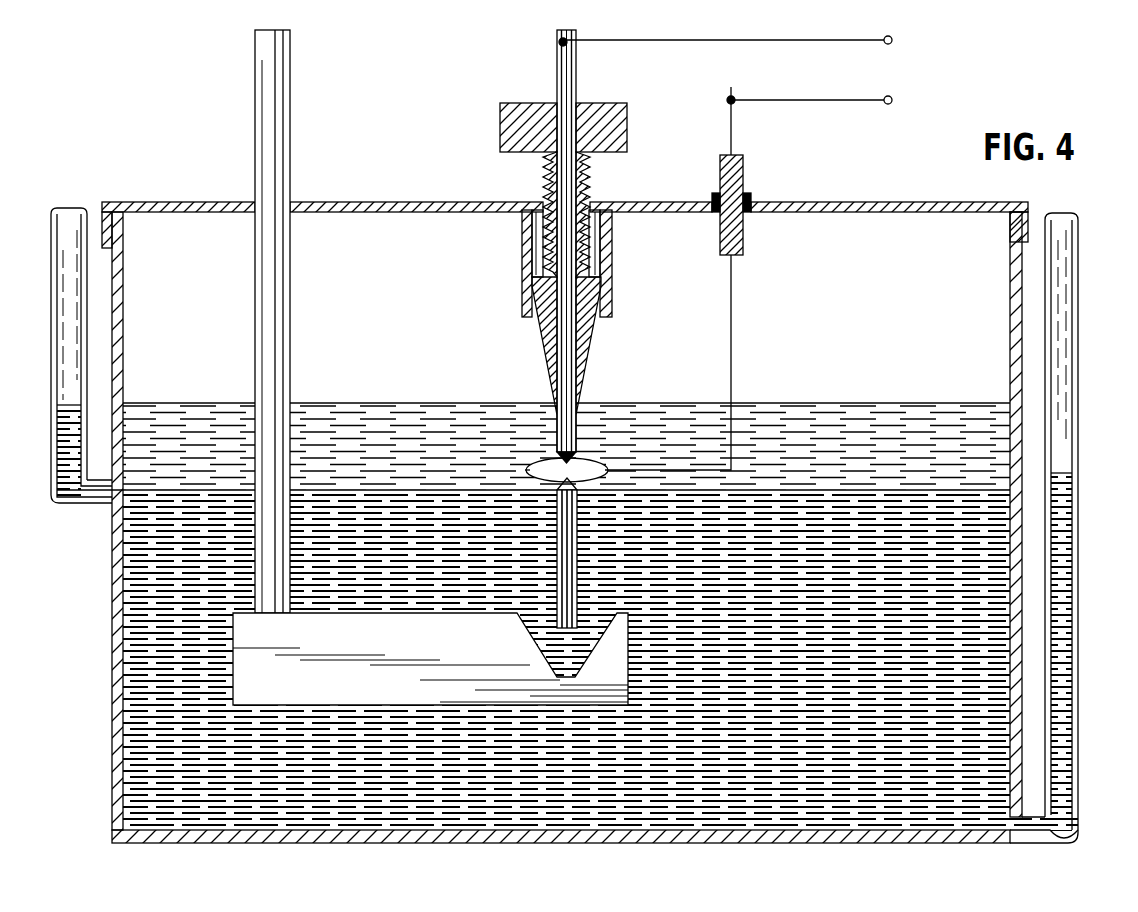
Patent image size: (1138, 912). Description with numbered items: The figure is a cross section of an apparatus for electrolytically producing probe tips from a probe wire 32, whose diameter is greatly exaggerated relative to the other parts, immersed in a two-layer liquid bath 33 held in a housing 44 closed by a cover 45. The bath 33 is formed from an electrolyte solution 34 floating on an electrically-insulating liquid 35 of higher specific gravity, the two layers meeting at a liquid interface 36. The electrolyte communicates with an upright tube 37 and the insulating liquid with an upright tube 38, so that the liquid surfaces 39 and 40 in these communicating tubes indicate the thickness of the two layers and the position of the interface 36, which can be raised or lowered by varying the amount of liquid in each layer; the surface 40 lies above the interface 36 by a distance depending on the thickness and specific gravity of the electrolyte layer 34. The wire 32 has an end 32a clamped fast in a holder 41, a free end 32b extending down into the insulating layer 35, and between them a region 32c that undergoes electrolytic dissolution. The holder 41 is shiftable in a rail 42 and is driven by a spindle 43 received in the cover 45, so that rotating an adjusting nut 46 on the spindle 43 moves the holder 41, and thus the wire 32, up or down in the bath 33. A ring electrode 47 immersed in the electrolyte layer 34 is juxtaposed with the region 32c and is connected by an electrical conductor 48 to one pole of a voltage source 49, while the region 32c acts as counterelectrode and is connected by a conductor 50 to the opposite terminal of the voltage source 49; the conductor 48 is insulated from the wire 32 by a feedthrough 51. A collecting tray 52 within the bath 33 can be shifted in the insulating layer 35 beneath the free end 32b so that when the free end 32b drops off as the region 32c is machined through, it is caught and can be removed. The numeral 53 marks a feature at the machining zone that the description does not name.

The probe wire 32 is at (563, 80).
The end of the probe wire 32a is at (575, 388).
The free end of the probe wire 32b is at (557, 537).
The wire region 32c is at (530, 477).
The two-layer liquid bath 33 is at (748, 472).
The electrolyte solution 34 is at (860, 403).
The electrically-insulating liquid 35 is at (160, 743).
The liquid interface 36 is at (300, 490).
The upright tube 37 is at (73, 211).
The upright tube 38 is at (1064, 268).
The liquid surface 39 is at (72, 405).
The liquid surface 40 is at (1053, 468).
The holder 41 is at (540, 352).
The rail 42 is at (522, 258).
The spindle 43 is at (545, 190).
The housing 44 is at (118, 607).
The cover 45 is at (133, 208).
The adjusting nut 46 is at (513, 130).
The ring electrode 47 is at (486, 472).
The electrical conductor 48 is at (733, 318).
The voltage source 49 is at (887, 70).
The conductor 50 is at (683, 45).
The feedthrough 51 is at (745, 232).
The collecting tray 52 is at (405, 632).
The meniscus 53 is at (592, 463).